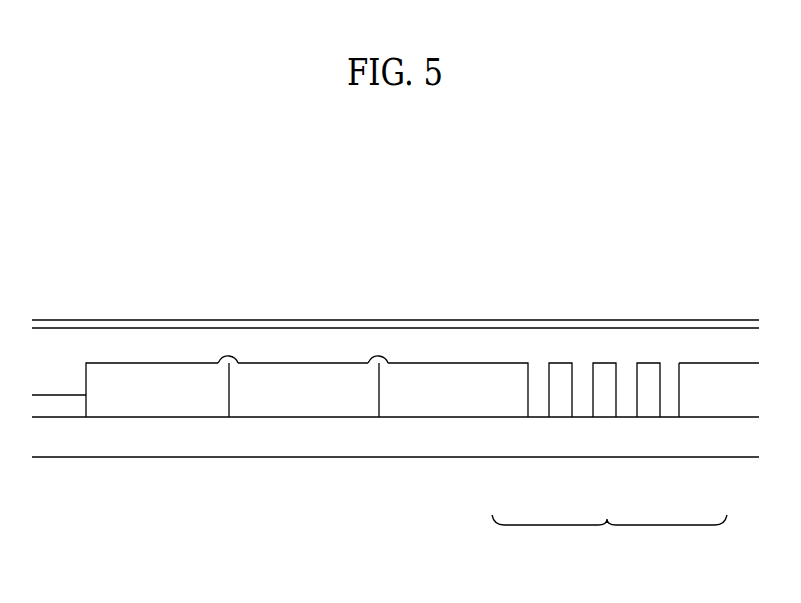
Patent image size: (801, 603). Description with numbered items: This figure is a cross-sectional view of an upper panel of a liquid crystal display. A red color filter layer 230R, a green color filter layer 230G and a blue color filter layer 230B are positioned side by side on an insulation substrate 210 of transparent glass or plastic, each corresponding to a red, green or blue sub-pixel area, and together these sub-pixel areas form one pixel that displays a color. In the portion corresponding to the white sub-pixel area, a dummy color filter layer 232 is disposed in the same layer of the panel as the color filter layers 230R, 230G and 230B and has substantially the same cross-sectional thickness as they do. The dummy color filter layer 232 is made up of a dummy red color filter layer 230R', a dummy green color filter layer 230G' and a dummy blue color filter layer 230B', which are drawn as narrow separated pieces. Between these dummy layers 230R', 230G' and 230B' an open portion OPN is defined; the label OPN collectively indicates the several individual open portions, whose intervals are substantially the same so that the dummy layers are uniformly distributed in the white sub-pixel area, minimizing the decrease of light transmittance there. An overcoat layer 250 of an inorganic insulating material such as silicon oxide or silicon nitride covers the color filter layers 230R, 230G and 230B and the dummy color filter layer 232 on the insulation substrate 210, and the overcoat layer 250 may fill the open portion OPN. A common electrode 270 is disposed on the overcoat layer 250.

The common electrode 270 is at (263, 325).
The overcoat layer 250 is at (436, 340).
The insulation substrate 210 is at (300, 450).
The blue color filter layer 230B is at (422, 386).
The green color filter layer 230G is at (308, 386).
The red color filter layer 230R is at (453, 390).
The dummy red color filter layer 230R' is at (536, 439).
The dummy green color filter layer 230G' is at (611, 439).
The dummy blue color filter layer 230B' is at (678, 439).
The dummy color filter layer 232 is at (609, 539).
The open portion OPN is at (670, 360).